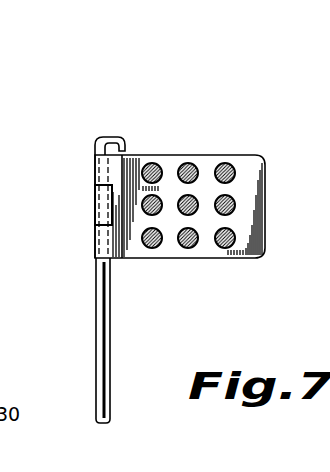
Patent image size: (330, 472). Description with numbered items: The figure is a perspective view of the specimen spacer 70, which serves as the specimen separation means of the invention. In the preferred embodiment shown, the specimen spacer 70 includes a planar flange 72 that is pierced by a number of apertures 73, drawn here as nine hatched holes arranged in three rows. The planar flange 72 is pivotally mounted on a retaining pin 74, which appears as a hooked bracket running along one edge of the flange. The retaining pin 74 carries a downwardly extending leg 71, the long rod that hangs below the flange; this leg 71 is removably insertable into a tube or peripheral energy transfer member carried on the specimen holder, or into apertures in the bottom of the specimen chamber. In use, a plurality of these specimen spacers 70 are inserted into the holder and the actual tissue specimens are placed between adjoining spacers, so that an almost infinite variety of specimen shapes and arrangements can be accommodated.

The specimen spacer 70 is at (84, 233).
The downwardly extending leg 71 is at (110, 337).
The planar flange 72 is at (140, 162).
The aperture 73 is at (233, 165).
The retaining pin 74 is at (117, 138).